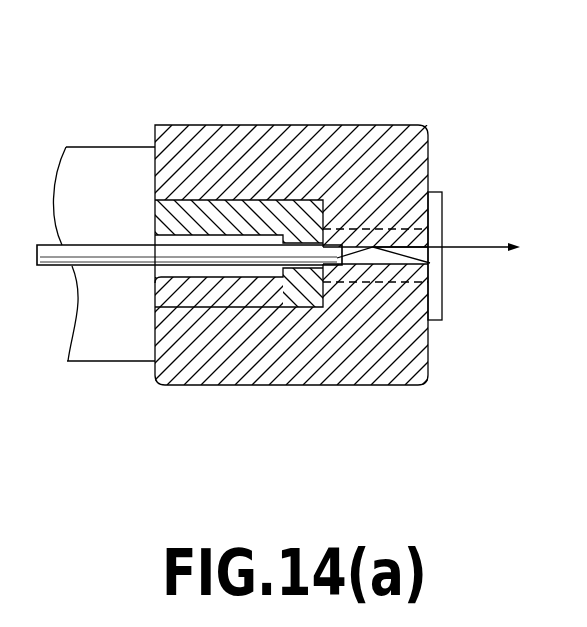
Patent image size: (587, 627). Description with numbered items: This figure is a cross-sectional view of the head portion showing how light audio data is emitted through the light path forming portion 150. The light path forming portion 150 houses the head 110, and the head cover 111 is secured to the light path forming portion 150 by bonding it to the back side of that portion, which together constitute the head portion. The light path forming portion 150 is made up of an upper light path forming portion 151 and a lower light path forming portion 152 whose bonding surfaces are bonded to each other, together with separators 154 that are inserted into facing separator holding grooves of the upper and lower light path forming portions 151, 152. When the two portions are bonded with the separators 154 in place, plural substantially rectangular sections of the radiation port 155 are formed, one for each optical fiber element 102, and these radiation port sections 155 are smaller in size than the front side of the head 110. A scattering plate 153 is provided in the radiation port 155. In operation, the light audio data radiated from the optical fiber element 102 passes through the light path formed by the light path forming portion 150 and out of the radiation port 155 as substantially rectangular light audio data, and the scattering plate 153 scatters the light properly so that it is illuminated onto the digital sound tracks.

The optical fiber element 102 is at (118, 262).
The head 110 is at (233, 300).
The head cover 111 is at (103, 165).
The light path forming portion 150 is at (293, 240).
The upper light path forming portion 151 is at (256, 145).
The lower light path forming portion 152 is at (365, 355).
The scattering plate 153 is at (398, 248).
The separator 154 is at (345, 232).
The radiation port 155 is at (450, 280).